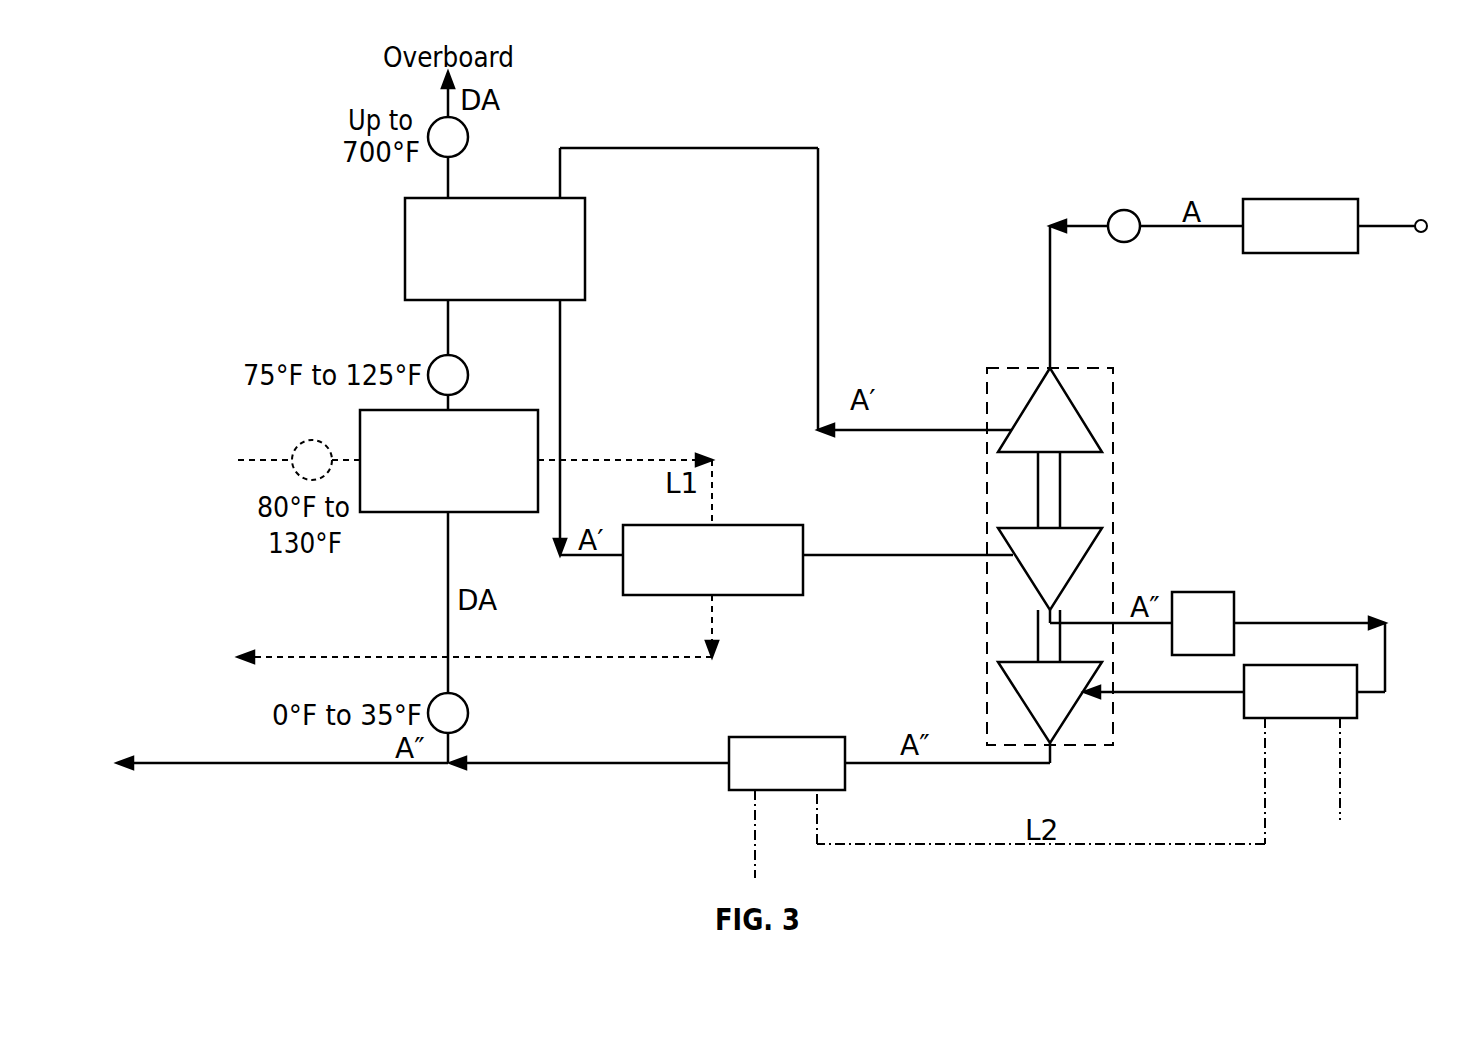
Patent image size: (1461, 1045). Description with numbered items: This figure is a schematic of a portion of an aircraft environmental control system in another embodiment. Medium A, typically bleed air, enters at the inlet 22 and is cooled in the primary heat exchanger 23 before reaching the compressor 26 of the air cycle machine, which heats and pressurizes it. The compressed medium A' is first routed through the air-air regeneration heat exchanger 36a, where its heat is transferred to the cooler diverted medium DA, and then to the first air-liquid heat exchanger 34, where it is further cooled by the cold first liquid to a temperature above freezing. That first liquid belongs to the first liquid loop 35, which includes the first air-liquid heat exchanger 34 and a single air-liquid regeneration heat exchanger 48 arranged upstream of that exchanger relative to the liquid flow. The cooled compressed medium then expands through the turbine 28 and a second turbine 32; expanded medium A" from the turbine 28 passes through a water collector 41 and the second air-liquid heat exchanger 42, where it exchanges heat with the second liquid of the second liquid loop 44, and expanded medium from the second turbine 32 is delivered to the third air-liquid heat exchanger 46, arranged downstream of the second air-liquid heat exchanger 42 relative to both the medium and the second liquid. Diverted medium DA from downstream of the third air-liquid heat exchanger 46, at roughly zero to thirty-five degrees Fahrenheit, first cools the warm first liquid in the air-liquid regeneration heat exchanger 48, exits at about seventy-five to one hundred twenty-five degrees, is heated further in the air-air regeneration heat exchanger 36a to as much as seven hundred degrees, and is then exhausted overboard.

The inlet 22 is at (1421, 219).
The primary heat exchanger 23 is at (1311, 198).
The compressor 26 is at (1070, 425).
The turbine 28 is at (1012, 538).
The second turbine 32 is at (1018, 676).
The first air-liquid heat exchanger 34 is at (803, 525).
The first liquid loop 35 is at (240, 480).
The air-air regeneration heat exchanger 36a is at (585, 212).
The water collector 41 is at (1203, 592).
The second air-liquid heat exchanger 42 is at (1313, 665).
The second liquid loop 44 is at (1222, 846).
The third air-liquid heat exchanger 46 is at (800, 737).
The air-liquid regeneration heat exchanger 48 is at (538, 420).